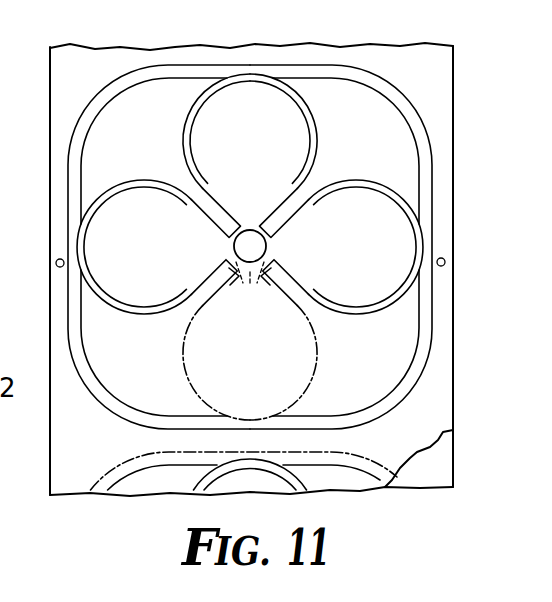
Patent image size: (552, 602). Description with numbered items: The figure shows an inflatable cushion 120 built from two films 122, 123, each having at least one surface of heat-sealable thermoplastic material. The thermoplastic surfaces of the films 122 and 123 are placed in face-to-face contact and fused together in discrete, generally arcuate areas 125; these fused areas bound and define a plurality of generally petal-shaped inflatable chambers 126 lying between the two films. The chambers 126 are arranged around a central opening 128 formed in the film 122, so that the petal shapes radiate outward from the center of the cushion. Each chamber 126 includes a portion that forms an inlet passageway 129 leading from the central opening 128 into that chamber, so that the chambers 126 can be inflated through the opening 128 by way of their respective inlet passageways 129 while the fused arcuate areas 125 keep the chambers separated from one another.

The inflatable cushion 120 is at (183, 40).
The film 122 is at (51, 99).
The film 123 is at (425, 479).
The generally arcuate areas 125 is at (185, 135).
The inflatable chambers 126 is at (277, 143).
The central opening 128 is at (266, 244).
The inlet passageway 129 is at (250, 295).